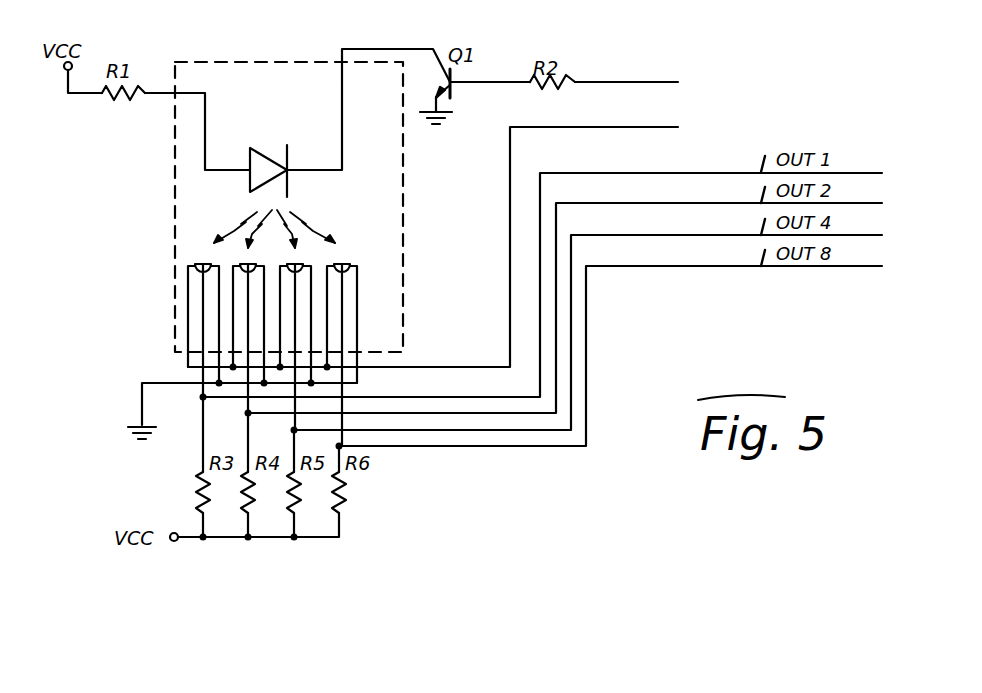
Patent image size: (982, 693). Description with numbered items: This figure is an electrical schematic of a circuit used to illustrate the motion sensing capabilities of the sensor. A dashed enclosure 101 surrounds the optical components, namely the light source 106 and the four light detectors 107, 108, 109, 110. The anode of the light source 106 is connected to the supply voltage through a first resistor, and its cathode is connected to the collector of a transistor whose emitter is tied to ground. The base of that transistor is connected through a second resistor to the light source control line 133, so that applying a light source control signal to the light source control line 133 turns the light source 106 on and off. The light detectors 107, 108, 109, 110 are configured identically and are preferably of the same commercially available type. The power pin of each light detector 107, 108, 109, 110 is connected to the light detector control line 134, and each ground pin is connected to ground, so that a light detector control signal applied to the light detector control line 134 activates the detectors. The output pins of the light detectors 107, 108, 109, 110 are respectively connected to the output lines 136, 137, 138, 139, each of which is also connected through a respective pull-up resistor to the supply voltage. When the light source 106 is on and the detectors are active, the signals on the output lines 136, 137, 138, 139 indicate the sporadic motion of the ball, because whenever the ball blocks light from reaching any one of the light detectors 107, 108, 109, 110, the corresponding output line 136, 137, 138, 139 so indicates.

The optical sensor module (dashed enclosure) 101 is at (243, 62).
The light source 106 is at (262, 148).
The light detector 107 is at (200, 263).
The light detector 108 is at (245, 263).
The light detector 109 is at (296, 263).
The light detector 110 is at (341, 263).
The light source control line 133 is at (618, 80).
The light detector control line 134 is at (625, 127).
The output line 136 is at (624, 173).
The output line 137 is at (626, 203).
The output line 138 is at (627, 235).
The output line 139 is at (627, 266).